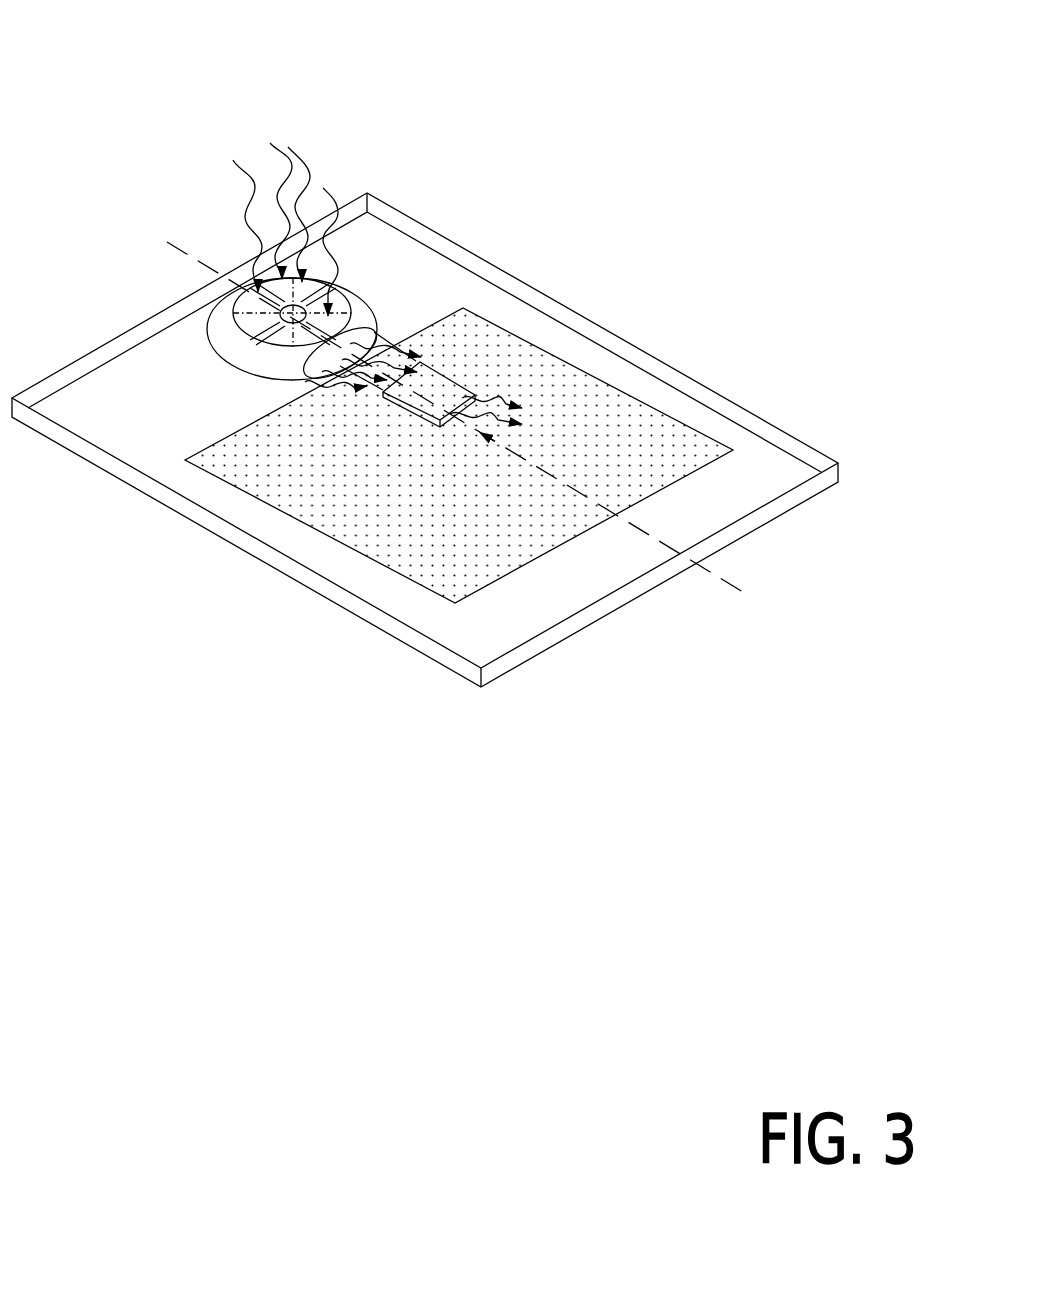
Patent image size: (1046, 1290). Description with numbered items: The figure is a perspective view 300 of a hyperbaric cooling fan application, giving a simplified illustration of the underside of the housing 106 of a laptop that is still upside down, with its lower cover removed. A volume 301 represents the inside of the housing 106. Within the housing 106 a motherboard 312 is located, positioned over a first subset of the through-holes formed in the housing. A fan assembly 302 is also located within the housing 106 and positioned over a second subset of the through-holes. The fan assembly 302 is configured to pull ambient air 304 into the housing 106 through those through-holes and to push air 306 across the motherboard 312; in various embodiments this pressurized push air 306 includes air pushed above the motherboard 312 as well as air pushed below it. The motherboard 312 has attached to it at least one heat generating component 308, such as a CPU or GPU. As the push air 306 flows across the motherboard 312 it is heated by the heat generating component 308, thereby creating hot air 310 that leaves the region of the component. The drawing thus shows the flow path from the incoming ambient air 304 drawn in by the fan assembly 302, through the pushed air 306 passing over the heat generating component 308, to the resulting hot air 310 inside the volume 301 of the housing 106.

The view 300 is at (99, 76).
The volume 301 is at (403, 268).
The housing 106 is at (676, 344).
The fan assembly 302 is at (212, 315).
The ambient air 304 is at (296, 160).
The push air 306 is at (380, 333).
The heat generating component 308 is at (422, 399).
The hot air 310 is at (493, 400).
The motherboard 312 is at (690, 458).